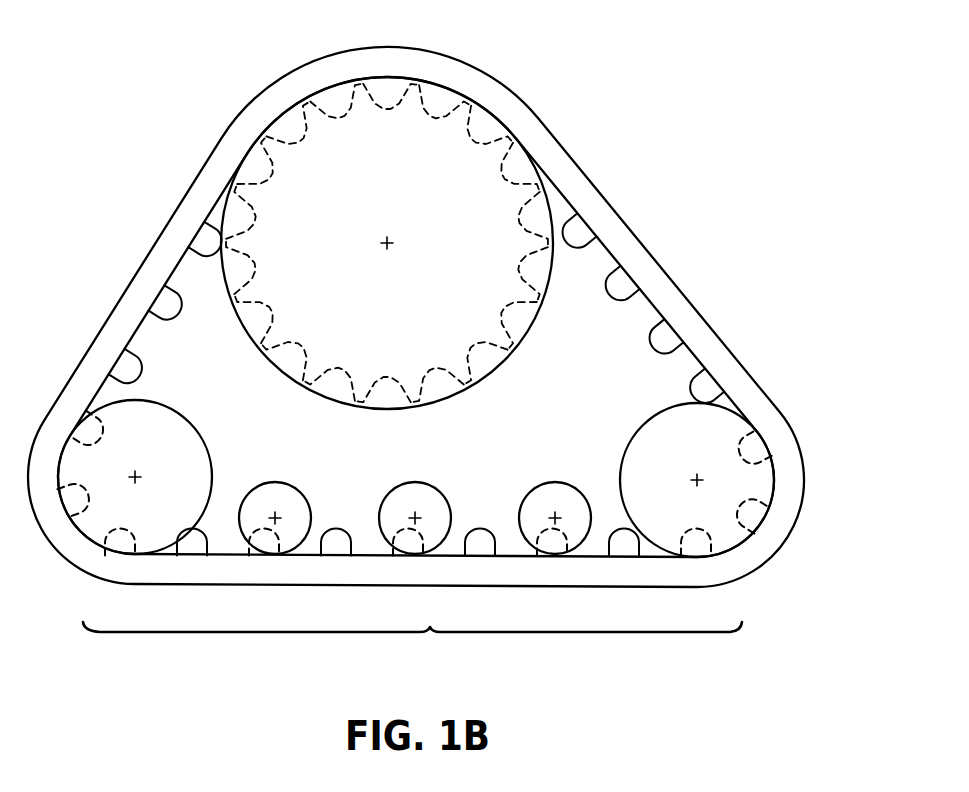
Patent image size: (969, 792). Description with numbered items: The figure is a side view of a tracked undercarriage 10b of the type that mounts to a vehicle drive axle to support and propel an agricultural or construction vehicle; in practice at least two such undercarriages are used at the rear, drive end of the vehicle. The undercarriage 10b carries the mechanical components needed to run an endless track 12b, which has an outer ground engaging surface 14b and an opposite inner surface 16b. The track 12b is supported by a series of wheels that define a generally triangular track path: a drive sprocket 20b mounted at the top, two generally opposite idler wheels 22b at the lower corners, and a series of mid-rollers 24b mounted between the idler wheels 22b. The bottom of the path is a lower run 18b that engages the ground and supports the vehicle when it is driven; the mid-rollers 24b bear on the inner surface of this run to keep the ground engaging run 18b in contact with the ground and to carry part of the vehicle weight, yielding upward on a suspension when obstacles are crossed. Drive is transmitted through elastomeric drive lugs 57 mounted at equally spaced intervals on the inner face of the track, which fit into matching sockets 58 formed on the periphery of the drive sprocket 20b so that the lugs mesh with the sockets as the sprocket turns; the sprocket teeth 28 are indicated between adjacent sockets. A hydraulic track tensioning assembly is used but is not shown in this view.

The undercarriage 10b is at (568, 80).
The track 12b is at (612, 218).
The outer ground engaging surface 14b is at (113, 308).
The inner surface 16b is at (138, 326).
The lower run 18b is at (412, 646).
The drive sprocket 20b is at (408, 191).
The idler wheels 22b is at (185, 454).
The mid-rollers 24b is at (290, 497).
The sprocket teeth 28 is at (283, 333).
The drive lugs 57 is at (163, 303).
The sockets 58 is at (258, 260).